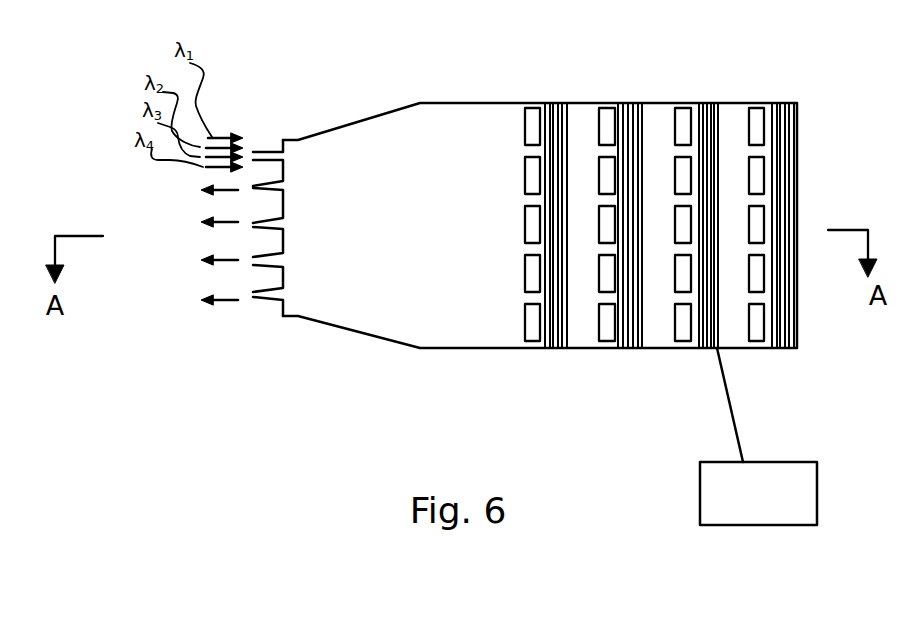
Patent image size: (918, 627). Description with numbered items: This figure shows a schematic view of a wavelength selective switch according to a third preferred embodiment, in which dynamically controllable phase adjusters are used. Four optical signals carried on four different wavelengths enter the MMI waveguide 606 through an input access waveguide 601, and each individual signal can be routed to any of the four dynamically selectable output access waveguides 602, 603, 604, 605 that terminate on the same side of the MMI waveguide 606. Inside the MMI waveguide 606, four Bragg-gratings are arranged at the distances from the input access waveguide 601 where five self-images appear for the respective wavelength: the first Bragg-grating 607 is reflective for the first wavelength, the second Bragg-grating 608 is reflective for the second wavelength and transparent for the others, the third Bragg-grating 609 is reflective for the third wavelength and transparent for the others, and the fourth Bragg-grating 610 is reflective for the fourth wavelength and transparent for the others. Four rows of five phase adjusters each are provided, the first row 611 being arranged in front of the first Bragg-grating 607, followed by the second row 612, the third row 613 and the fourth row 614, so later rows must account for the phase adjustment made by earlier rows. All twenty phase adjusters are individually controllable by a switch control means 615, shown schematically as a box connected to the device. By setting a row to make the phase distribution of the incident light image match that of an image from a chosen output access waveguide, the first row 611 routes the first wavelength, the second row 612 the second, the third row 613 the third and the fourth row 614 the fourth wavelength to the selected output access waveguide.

The input access waveguide 601 is at (278, 148).
The output access waveguide 602 is at (253, 187).
The output access waveguide 603 is at (253, 225).
The output access waveguide 604 is at (253, 260).
The output access waveguide 605 is at (253, 297).
The MMI waveguide 606 is at (465, 162).
The first Bragg-grating 607 is at (782, 103).
The second Bragg-grating 608 is at (707, 103).
The third Bragg-grating 609 is at (628, 103).
The fourth Bragg-grating 610 is at (556, 103).
The first row of phase adjusters 611 is at (757, 348).
The second row of phase adjusters 612 is at (683, 348).
The third row of phase adjusters 613 is at (607, 348).
The fourth row of phase adjusters 614 is at (533, 348).
The switch control means 615 is at (700, 485).